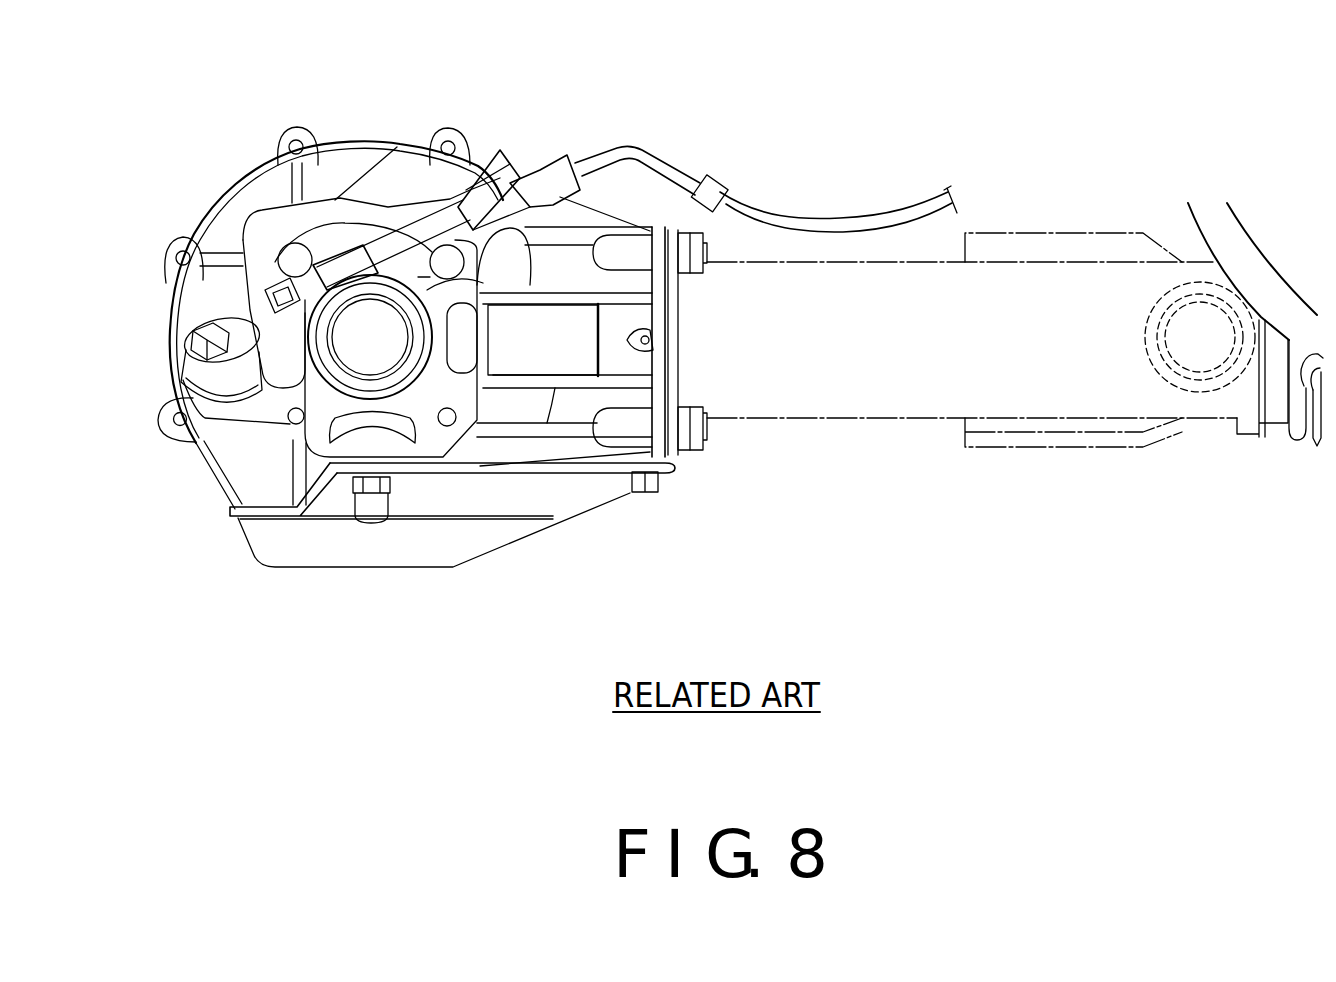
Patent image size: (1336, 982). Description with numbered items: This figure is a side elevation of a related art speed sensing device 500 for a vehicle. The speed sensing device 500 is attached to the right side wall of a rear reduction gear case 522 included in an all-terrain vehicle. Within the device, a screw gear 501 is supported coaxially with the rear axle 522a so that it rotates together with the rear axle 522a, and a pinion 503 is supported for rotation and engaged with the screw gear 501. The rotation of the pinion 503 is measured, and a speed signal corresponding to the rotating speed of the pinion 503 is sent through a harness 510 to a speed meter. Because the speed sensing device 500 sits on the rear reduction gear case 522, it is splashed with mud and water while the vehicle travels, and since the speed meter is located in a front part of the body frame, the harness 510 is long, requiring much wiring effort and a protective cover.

The speed sensing device 500 is at (415, 213).
The screw gear 501 is at (263, 333).
The pinion 503 is at (345, 252).
The harness 510 is at (823, 223).
The rear reduction gear case 522 is at (242, 203).
The rear axle 522a is at (333, 380).